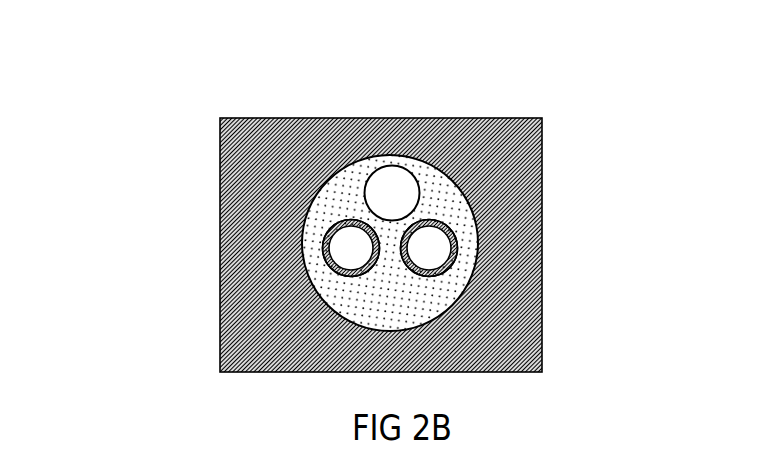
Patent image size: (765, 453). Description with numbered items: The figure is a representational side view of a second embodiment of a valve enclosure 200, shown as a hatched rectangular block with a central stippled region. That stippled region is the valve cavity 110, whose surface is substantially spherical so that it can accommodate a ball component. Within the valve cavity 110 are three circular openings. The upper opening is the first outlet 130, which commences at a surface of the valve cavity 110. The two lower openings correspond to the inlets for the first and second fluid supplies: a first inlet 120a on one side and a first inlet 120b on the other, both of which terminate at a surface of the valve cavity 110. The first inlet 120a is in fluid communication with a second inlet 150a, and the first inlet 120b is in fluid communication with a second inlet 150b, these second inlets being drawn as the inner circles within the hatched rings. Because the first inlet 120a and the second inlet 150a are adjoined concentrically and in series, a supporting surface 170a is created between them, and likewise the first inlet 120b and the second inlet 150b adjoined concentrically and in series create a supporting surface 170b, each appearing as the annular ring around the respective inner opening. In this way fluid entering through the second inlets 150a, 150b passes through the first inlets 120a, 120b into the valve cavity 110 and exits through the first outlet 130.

The valve enclosure 200 is at (180, 64).
The valve cavity 110 is at (417, 308).
The first outlet 130 is at (398, 192).
The first inlet 120a is at (324, 238).
The second inlet 150a is at (343, 256).
The supporting surface 170a is at (366, 273).
The first inlet 120b is at (454, 234).
The second inlet 150b is at (441, 259).
The supporting surface 170b is at (415, 273).